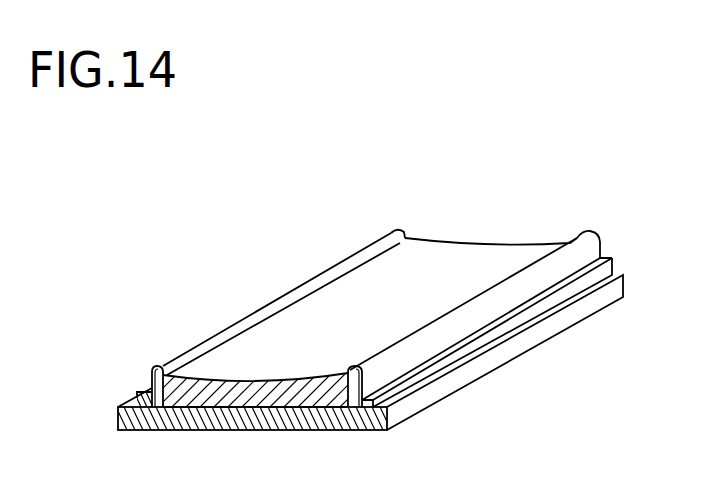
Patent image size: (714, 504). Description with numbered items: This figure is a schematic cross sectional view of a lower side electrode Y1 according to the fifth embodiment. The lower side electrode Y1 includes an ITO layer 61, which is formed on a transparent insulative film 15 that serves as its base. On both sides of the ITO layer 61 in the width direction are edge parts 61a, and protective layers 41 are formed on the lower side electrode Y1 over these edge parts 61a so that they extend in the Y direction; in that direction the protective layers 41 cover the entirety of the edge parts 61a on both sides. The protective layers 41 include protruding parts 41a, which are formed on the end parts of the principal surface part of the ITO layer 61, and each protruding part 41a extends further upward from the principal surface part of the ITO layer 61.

The transparent insulative film 15 is at (233, 420).
The ITO layer 61 is at (299, 402).
The edge parts 61a is at (151, 373).
The protective layers 41 is at (138, 391).
The protruding parts 41a is at (252, 320).
The lower side electrode Y1 is at (421, 186).